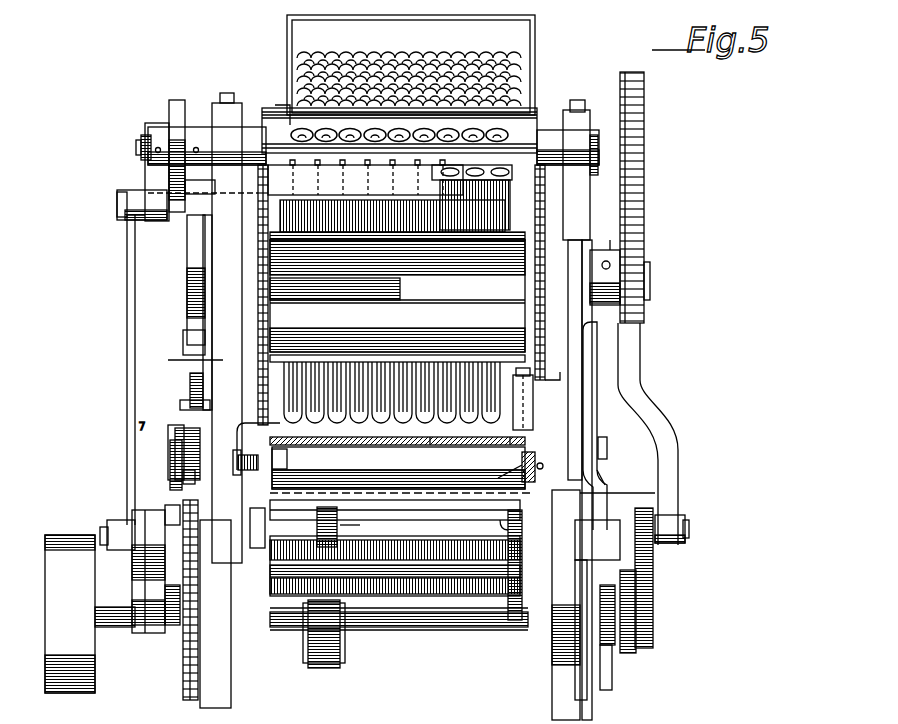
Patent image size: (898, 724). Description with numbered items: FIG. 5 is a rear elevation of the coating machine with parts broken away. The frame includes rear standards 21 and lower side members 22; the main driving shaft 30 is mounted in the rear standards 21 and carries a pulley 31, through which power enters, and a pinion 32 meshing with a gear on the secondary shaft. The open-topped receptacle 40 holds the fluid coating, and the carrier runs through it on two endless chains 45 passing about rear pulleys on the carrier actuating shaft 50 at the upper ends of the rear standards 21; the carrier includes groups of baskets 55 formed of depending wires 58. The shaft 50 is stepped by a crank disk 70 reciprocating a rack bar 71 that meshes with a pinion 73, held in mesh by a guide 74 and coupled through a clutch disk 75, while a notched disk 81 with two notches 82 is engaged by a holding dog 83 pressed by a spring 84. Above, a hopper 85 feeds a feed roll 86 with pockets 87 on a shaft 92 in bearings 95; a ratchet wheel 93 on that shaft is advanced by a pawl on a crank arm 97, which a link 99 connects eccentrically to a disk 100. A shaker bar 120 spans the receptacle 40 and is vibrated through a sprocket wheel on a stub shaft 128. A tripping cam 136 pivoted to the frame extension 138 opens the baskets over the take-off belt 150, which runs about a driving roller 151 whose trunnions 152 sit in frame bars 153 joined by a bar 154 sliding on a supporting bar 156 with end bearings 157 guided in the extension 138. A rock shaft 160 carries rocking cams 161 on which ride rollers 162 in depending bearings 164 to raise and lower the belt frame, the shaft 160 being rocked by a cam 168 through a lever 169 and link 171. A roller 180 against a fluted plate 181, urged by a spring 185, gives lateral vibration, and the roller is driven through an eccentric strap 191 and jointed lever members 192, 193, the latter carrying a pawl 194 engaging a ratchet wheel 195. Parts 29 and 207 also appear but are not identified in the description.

The hopper 85 is at (538, 50).
The feed roll 86 is at (527, 114).
The pockets 87 is at (302, 130).
The shaft 92 is at (142, 148).
The ratchet wheel 93 is at (178, 100).
The crank arm 97 is at (158, 178).
The endless chains 45 is at (203, 328).
The notches 82 is at (190, 237).
The notched disk 81 is at (190, 290).
The holding dog 83 is at (193, 352).
The rear standards 21 is at (183, 360).
The spring 84 is at (192, 392).
The link 99 is at (128, 282).
The shaker bar 120 is at (488, 200).
The carrier actuating shaft 50 is at (382, 278).
The open topped receptacle 40 is at (397, 332).
The group of baskets 55 is at (386, 426).
The wires 58 is at (397, 437).
The frame bars 153 is at (547, 417).
The take-off belt 150 is at (435, 440).
The trunnions 152 is at (505, 437).
The driving roller 151 is at (398, 468).
The depending bearings 164 is at (492, 476).
The shaft 29 is at (405, 553).
The main driving shaft 30 is at (437, 627).
The pinion 32 is at (325, 628).
The rock shaft 160 is at (357, 567).
The rollers 162 is at (267, 522).
The rocking cams 161 is at (270, 528).
The transverse bar 156 is at (440, 532).
The coiled expansion spring 185 is at (262, 447).
The pawl 194 is at (188, 450).
The lever member 193 is at (180, 464).
The crank disk 100 is at (183, 478).
The ratchet wheel 195 is at (180, 517).
The bearings 157 is at (197, 480).
The belt frame bar 154 is at (250, 466).
The pulley 31 is at (58, 534).
The eccentric strap 191 is at (180, 588).
The lever member 192 is at (175, 516).
The stub shaft 128 is at (187, 633).
The bearings 95 is at (570, 220).
The guide 74 is at (648, 255).
The pinion 73 is at (650, 276).
The clutch disk 75 is at (605, 234).
The lower side members 22 is at (575, 345).
The tripping cam 136 is at (560, 373).
The rack bar 71 is at (642, 373).
The plate 207 is at (598, 419).
The roller 180 is at (605, 458).
The fluted plate 181 is at (605, 482).
The extension frame 138 is at (580, 494).
The cam 168 is at (630, 568).
The crank disk 70 is at (622, 612).
The link 171 is at (622, 615).
The lever 169 is at (622, 630).